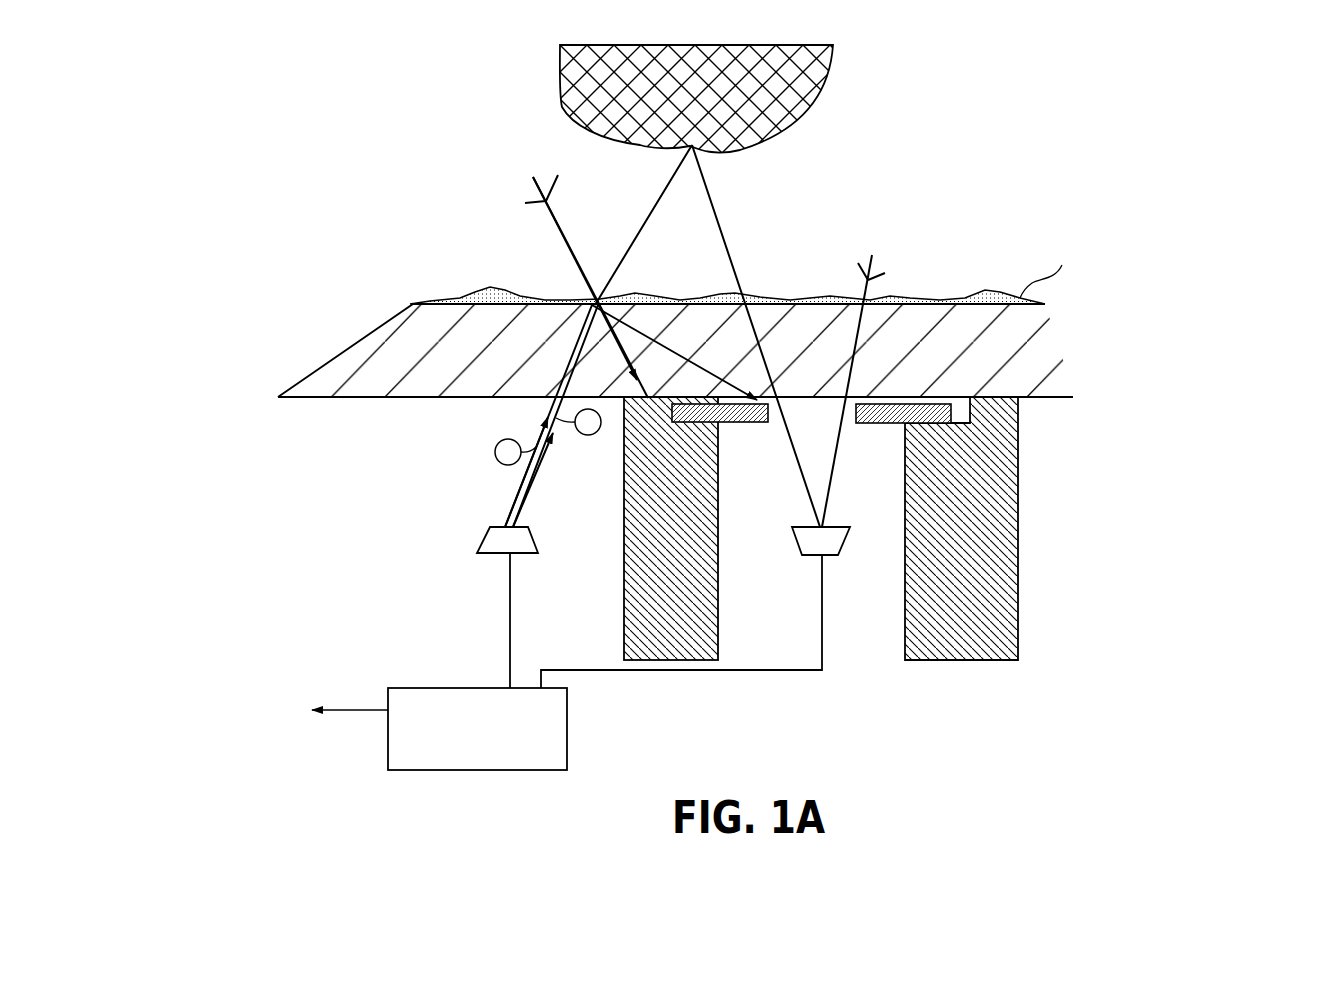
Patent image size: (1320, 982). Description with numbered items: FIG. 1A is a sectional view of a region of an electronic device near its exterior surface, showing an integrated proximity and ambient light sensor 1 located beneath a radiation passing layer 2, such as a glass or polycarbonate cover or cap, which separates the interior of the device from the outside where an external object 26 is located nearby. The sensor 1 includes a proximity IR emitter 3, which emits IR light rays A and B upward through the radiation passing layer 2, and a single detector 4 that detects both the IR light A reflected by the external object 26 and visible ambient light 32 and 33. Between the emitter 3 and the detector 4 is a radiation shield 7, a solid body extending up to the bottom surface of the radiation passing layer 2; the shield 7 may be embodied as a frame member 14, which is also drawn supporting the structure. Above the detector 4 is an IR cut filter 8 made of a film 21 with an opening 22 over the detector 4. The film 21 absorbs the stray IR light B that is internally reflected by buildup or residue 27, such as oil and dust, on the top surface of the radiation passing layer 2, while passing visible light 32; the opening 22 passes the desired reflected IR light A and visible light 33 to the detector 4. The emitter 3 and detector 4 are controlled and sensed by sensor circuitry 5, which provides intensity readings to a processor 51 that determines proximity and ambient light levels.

The integrated proximity and ambient light sensor 1 is at (352, 483).
The radiation passing layer 2 is at (1020, 362).
The proximity IR emitter 3 is at (487, 533).
The detector 4 is at (843, 548).
The sensor circuitry 5 is at (388, 732).
The radiation shield 7 is at (642, 612).
The IR cut filter 8 is at (957, 421).
The frame member 14 is at (990, 558).
The film 21 is at (672, 410).
The opening 22 is at (803, 423).
The external object 26 is at (560, 103).
The buildup or residue 27 is at (490, 287).
The visible light 32 is at (580, 236).
The visible light 33 is at (878, 265).
The processor 51 is at (279, 714).